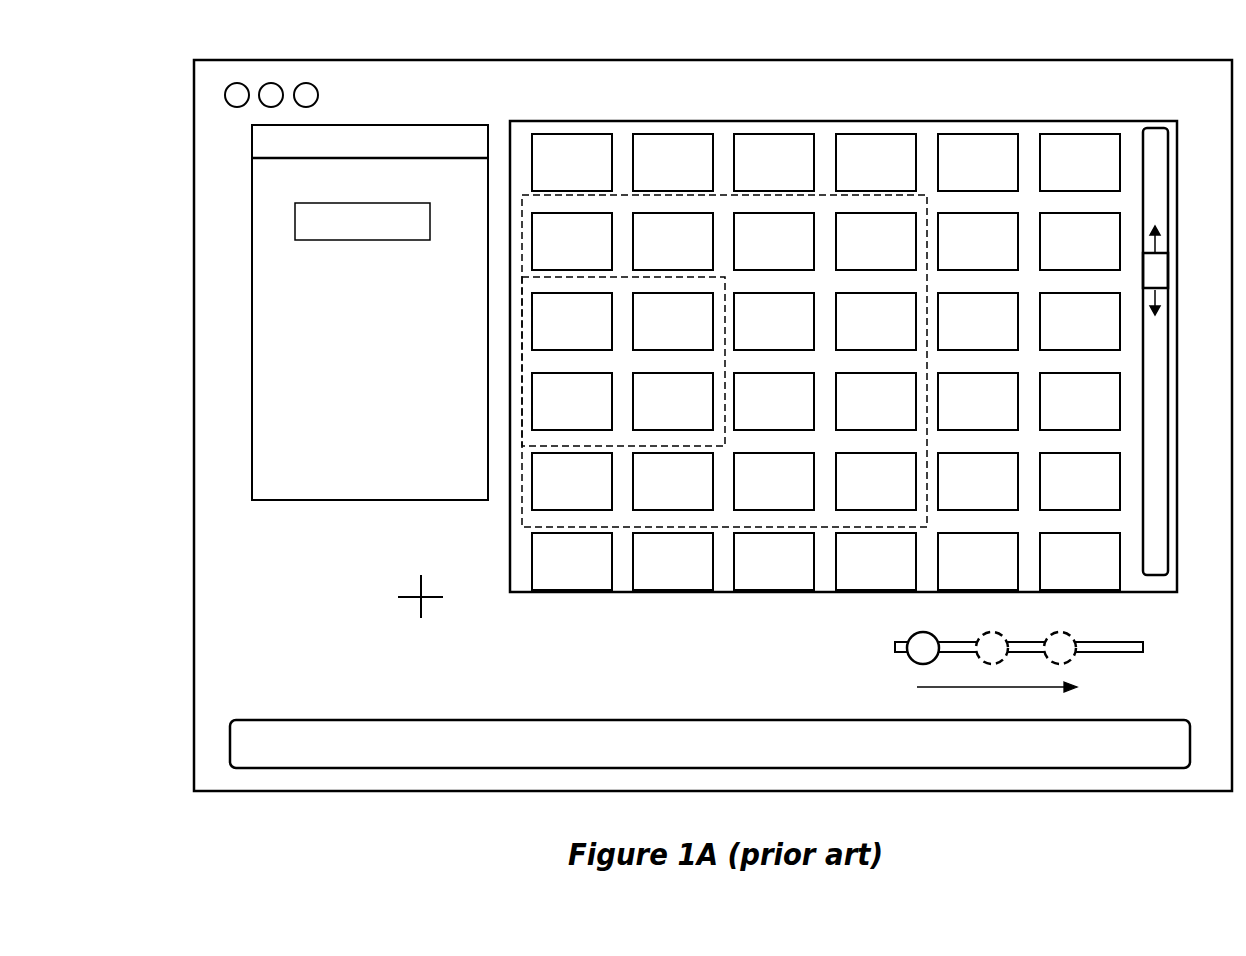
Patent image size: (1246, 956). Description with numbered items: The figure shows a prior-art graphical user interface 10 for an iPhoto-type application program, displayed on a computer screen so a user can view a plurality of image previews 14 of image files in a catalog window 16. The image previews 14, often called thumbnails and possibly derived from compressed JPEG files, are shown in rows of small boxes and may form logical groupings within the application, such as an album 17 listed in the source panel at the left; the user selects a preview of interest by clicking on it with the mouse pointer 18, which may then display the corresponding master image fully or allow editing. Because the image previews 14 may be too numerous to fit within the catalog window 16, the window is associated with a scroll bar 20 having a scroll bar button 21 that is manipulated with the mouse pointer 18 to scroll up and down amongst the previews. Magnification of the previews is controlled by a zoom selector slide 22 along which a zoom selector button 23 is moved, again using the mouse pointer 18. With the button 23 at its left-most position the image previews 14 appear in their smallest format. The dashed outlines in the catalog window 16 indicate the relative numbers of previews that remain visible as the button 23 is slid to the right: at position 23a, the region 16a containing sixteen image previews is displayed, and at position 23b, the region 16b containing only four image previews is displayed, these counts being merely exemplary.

The graphical user interface 10 is at (432, 80).
The image previews 14 is at (1096, 135).
The catalog window 16 is at (623, 122).
The sixteen-preview display region 16a is at (825, 527).
The four-preview display region 16b is at (622, 447).
The album 17 is at (305, 237).
The mouse pointer 18 is at (408, 597).
The scroll bar 20 is at (1153, 180).
The scroll bar button 21 is at (1163, 265).
The zoom selector slide 22 is at (1125, 645).
The zoom selector button 23 is at (925, 655).
The first zoom button position 23a is at (985, 638).
The second zoom button position 23b is at (1053, 635).